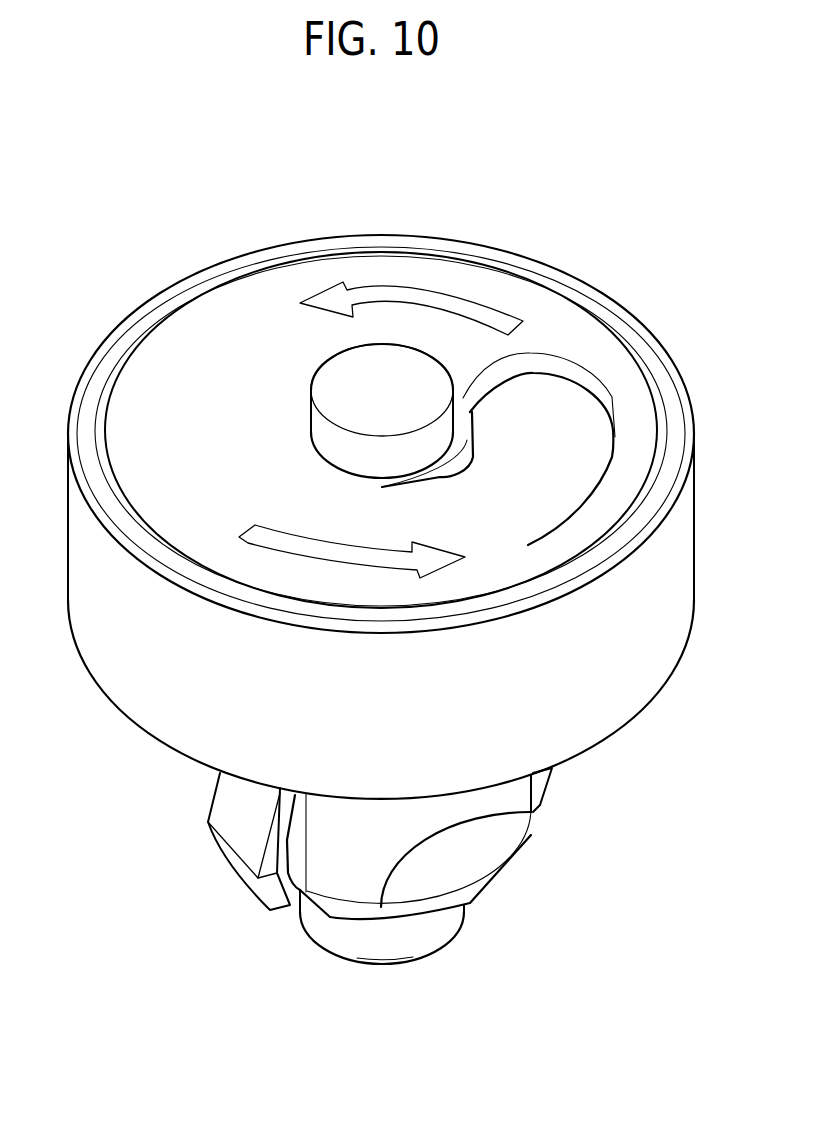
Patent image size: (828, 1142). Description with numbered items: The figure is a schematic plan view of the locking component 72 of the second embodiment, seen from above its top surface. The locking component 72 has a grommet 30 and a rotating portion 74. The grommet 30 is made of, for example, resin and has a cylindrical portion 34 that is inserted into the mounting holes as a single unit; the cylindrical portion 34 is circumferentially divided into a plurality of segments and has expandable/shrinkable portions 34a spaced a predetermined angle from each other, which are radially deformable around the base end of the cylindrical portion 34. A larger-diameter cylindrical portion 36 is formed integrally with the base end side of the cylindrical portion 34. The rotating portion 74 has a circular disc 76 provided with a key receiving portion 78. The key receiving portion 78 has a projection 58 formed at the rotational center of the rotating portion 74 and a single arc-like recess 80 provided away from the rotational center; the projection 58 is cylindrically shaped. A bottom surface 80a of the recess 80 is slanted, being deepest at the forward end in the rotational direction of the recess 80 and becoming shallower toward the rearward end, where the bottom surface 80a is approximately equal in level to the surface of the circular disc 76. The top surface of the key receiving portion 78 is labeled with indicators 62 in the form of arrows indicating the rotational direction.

The locking component 72 is at (500, 102).
The rotating portion 74 is at (298, 252).
The circular disc 76 is at (187, 322).
The key receiving portion 78 is at (462, 342).
The arc-like recess 80 is at (594, 378).
The bottom surface 80a is at (555, 405).
The projection 58 is at (332, 384).
The indicators 62 is at (382, 290).
The larger-diameter cylindrical portion 36 is at (636, 692).
The grommet 30 is at (190, 842).
The cylindrical portion 34 is at (497, 850).
The expandable/shrinkable portions 34a is at (245, 878).